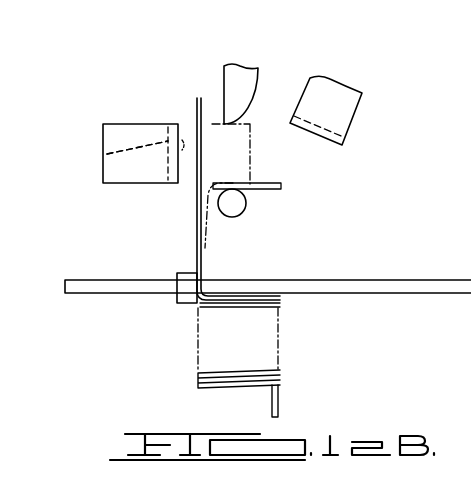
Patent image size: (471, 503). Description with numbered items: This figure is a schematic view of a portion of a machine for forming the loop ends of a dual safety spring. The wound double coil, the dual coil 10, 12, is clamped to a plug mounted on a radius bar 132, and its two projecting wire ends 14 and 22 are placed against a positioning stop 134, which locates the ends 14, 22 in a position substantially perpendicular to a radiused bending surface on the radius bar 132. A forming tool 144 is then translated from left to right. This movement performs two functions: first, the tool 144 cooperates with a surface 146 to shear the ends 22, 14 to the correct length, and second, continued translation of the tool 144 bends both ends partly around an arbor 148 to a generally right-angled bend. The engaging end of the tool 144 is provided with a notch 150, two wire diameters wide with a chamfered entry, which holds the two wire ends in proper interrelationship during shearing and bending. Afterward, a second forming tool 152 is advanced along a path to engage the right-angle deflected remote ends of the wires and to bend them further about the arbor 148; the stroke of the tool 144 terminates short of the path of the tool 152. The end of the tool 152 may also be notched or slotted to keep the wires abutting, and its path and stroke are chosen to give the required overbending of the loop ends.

The dual coil 10 is at (196, 325).
The dual coil 12 is at (196, 345).
The projecting end 14 is at (197, 200).
The projecting end 22 is at (202, 163).
The radius bar 132 is at (383, 289).
The positioning stop 134 is at (183, 273).
The forming tool 144 is at (110, 126).
The surface 146 is at (252, 84).
The arbor 148 is at (238, 209).
The notch 150 is at (107, 155).
The forming tool 152 is at (345, 92).